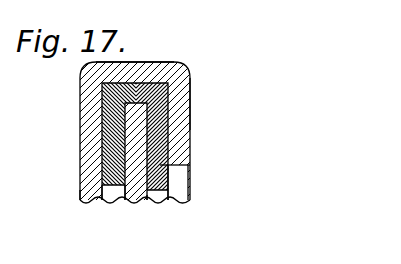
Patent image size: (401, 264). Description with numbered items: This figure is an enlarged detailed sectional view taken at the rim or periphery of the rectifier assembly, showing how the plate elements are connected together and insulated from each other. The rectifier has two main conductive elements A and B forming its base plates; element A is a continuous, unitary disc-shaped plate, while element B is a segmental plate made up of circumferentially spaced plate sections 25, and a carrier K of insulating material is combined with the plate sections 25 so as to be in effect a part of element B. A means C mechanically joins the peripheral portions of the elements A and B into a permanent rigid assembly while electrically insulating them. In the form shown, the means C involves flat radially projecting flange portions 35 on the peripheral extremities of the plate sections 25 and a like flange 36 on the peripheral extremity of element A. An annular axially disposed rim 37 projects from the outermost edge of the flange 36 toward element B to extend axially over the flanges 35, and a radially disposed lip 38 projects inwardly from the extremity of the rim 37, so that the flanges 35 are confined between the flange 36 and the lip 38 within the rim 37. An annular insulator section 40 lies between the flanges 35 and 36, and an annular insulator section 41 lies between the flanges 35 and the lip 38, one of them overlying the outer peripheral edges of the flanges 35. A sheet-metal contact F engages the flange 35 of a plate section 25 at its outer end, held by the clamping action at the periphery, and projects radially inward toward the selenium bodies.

The plate sections 25 is at (132, 200).
The flange portions 35 is at (142, 137).
The flange 36 is at (82, 138).
The rim 37 is at (183, 44).
The lip 38 is at (192, 108).
The insulator section 40 is at (108, 93).
The insulator section 41 is at (158, 160).
The main conductive element A is at (72, 196).
The conductive element B is at (146, 200).
The connecting means C is at (199, 81).
The contacts F is at (110, 198).
The carrier K is at (180, 187).